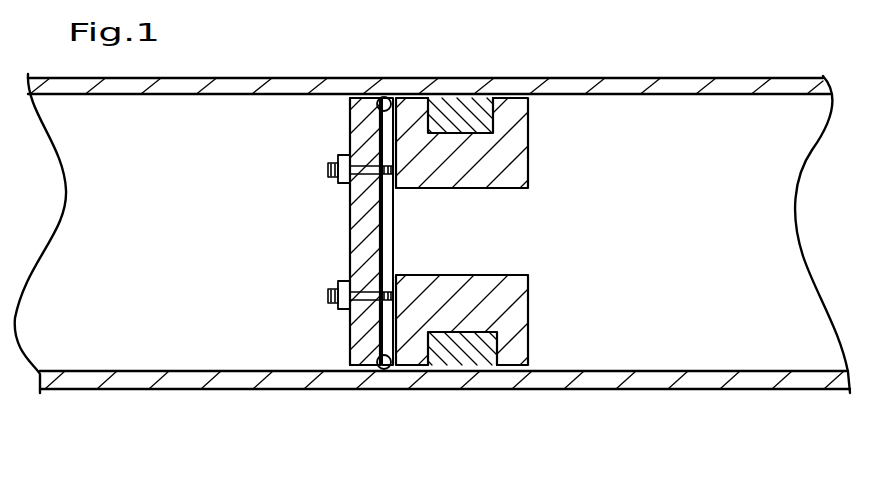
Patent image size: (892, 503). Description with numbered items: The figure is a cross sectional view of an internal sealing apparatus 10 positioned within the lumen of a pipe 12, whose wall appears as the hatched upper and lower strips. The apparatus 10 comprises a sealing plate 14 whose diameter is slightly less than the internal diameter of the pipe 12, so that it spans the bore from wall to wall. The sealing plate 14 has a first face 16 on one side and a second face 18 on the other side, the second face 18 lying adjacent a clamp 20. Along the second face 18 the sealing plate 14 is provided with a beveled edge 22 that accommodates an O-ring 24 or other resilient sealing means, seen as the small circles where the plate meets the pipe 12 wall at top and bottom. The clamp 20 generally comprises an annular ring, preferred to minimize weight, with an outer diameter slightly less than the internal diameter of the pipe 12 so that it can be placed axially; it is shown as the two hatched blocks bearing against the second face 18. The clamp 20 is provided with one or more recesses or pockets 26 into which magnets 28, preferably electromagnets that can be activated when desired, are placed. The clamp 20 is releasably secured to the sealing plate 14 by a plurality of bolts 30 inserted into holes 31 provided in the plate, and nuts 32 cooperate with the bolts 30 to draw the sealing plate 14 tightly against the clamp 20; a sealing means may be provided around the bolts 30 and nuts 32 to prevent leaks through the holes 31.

The sealing apparatus 10 is at (608, 172).
The pipe 12 is at (720, 88).
The sealing plate 14 is at (347, 125).
The first face 16 is at (350, 236).
The second face 18 is at (382, 218).
The clamp 20 is at (528, 140).
The beveled edge 22 is at (353, 97).
The O-ring 24 is at (385, 97).
The pockets 26 is at (479, 137).
The magnets 28 is at (469, 108).
The bolts 30 is at (328, 170).
The holes 31 is at (366, 156).
The nuts 32 is at (343, 184).